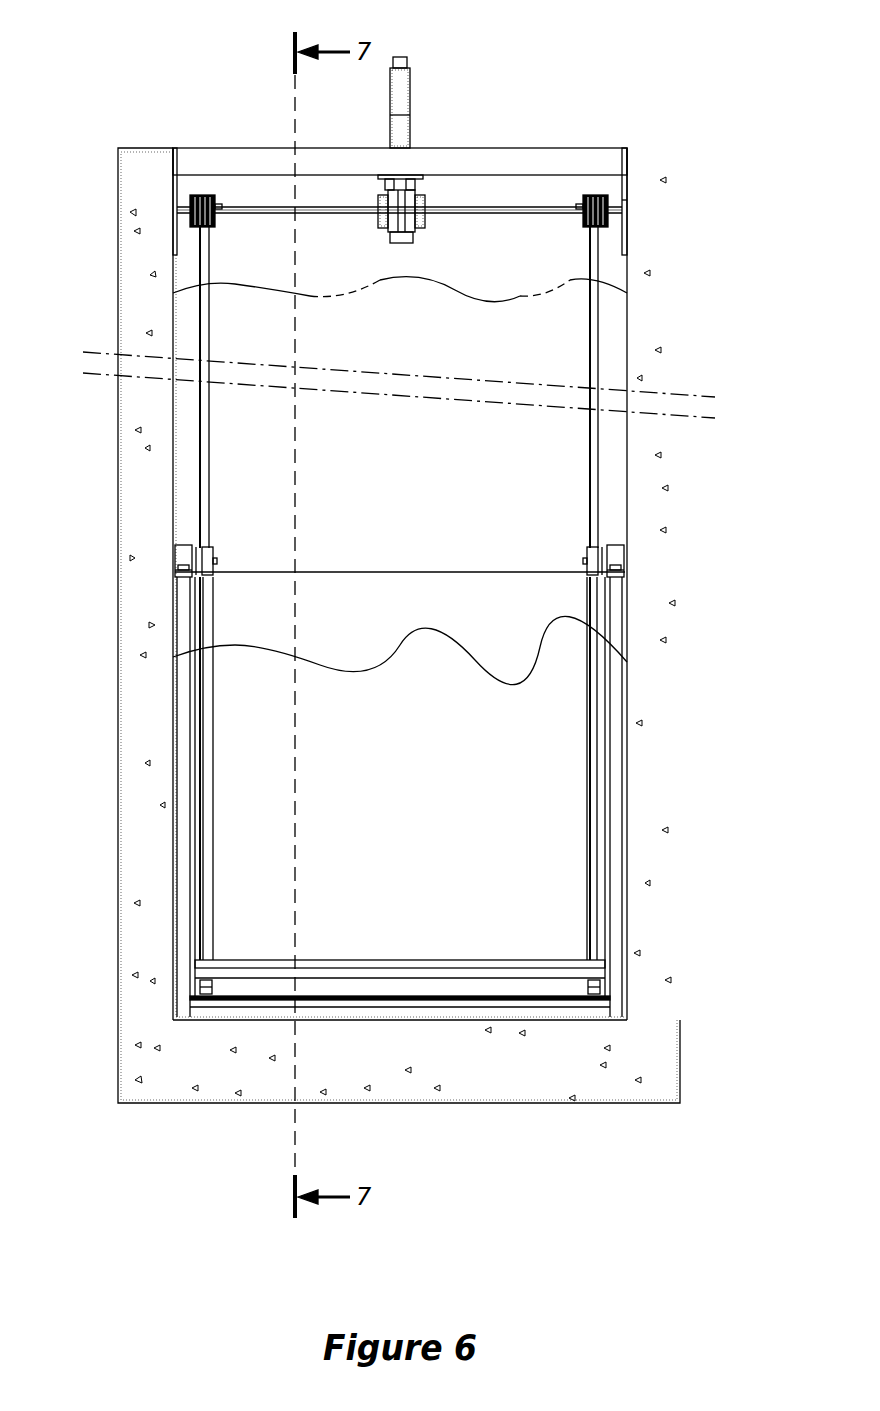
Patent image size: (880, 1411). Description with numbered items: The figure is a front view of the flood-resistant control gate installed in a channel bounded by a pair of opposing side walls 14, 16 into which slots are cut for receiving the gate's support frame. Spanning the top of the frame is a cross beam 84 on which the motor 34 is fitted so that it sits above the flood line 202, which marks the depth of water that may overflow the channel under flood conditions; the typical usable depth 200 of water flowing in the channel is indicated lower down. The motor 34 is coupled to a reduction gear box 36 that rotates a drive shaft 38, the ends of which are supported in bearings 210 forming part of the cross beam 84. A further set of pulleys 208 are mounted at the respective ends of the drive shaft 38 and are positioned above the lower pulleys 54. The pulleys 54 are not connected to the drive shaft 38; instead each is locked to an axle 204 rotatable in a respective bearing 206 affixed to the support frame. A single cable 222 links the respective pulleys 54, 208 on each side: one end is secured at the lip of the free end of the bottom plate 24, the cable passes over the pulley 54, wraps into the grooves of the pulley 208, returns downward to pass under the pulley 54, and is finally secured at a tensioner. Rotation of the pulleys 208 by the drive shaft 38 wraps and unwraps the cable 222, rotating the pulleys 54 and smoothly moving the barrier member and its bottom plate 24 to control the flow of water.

The side wall 14 is at (125, 467).
The side wall 16 is at (678, 467).
The bottom plate 24 is at (400, 972).
The motor 34 is at (399, 56).
The reduction gear box 36 is at (412, 220).
The drive shaft 38 is at (358, 214).
The pulley 54 is at (214, 552).
The cross beam 84 is at (510, 147).
The usable depth 200 is at (396, 645).
The flood line 202 is at (481, 292).
The axle 204 is at (217, 562).
The bearing 206 is at (186, 547).
The pulley 208 is at (215, 222).
The bearing 210 is at (176, 154).
The cable 222 is at (209, 323).